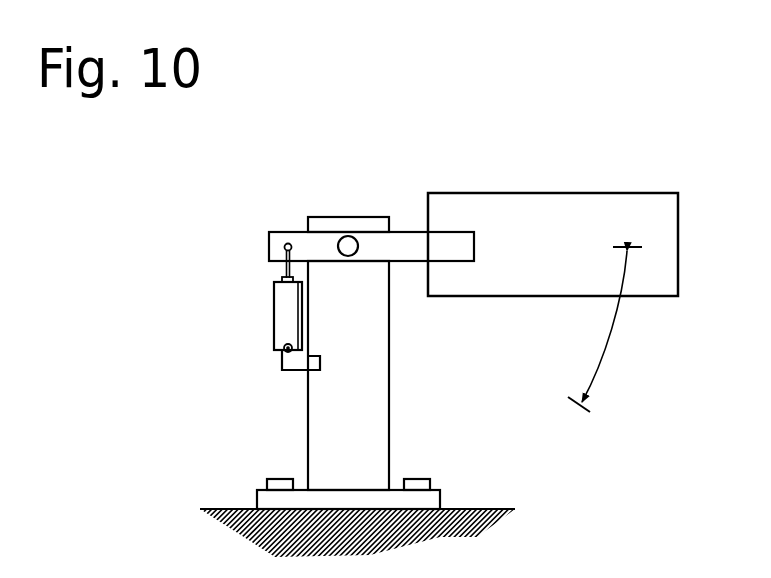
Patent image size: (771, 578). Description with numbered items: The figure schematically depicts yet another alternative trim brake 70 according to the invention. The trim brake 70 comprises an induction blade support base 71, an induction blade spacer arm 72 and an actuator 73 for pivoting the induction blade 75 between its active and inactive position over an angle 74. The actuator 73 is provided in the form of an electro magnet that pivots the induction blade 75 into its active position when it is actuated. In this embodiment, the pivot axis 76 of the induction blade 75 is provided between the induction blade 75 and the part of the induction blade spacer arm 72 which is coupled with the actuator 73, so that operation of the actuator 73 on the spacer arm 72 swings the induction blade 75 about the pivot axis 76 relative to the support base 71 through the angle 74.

The trim brake 70 is at (282, 210).
The induction blade support base 71 is at (364, 373).
The induction blade spacer arm 72 is at (403, 227).
The actuator 73 is at (270, 314).
The angle 74 is at (609, 329).
The induction blade 75 is at (565, 235).
The pivot axis 76 is at (343, 228).